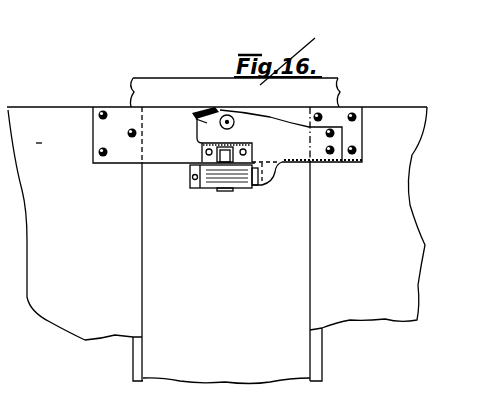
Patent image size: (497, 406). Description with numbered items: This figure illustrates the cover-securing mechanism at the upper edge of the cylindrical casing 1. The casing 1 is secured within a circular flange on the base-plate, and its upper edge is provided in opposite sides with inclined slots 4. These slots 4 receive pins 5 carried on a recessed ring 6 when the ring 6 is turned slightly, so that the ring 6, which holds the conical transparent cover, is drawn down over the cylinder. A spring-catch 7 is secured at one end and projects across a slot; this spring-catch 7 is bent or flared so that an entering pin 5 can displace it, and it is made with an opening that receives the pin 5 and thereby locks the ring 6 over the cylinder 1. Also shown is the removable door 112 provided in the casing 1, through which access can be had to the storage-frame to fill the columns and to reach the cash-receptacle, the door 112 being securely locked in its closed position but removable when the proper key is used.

The cylindrical casing 1 is at (217, 223).
The inclined slots 4 is at (212, 108).
The pins 5 is at (233, 117).
The recessed ring 6 is at (174, 135).
The spring-catch 7 is at (276, 149).
The removable door 112 is at (227, 245).